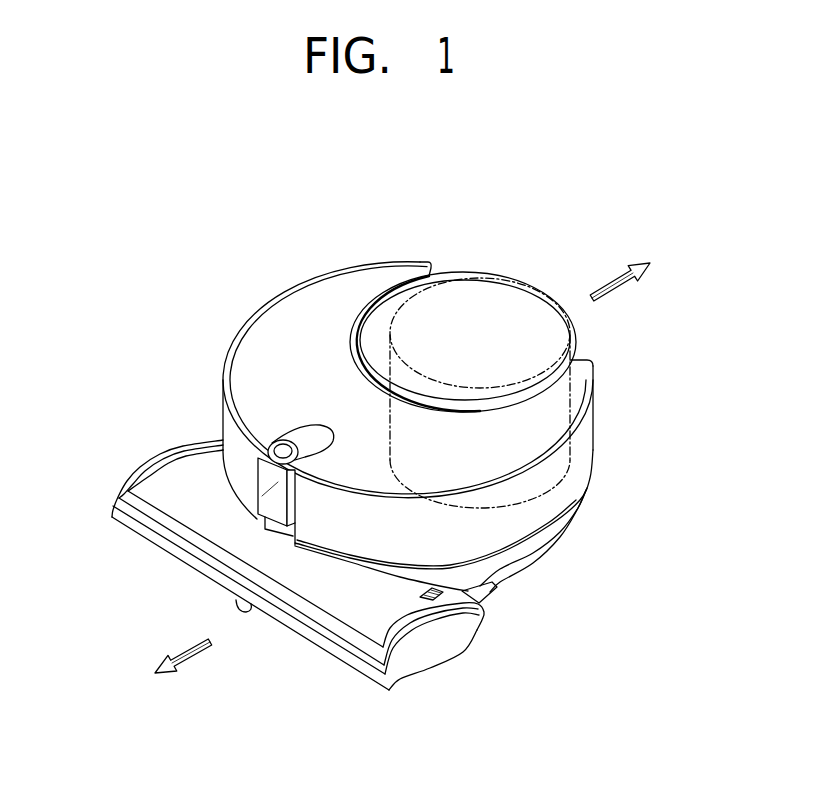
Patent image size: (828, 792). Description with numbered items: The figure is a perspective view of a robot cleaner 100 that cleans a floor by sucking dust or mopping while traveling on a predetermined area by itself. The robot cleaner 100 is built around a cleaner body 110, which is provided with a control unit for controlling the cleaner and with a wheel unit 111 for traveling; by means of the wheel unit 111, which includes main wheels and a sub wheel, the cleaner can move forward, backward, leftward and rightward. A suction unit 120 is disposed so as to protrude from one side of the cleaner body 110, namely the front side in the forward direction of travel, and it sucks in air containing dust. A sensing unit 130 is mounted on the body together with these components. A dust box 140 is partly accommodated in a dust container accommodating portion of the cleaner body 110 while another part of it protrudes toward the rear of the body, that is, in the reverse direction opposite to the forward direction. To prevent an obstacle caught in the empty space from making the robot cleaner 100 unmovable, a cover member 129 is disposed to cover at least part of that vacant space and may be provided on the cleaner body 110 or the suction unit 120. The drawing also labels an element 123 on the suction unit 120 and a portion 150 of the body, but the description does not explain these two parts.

The robot cleaner 100 is at (256, 280).
The cleaner body 110 is at (593, 445).
The wheel unit 111 is at (493, 587).
The suction unit 120 is at (167, 495).
The caster 123 is at (240, 603).
The cover member 129 is at (476, 596).
The sensing unit 130 is at (242, 460).
The dust box 140 is at (570, 390).
The dust bin seating recess 150 is at (503, 302).